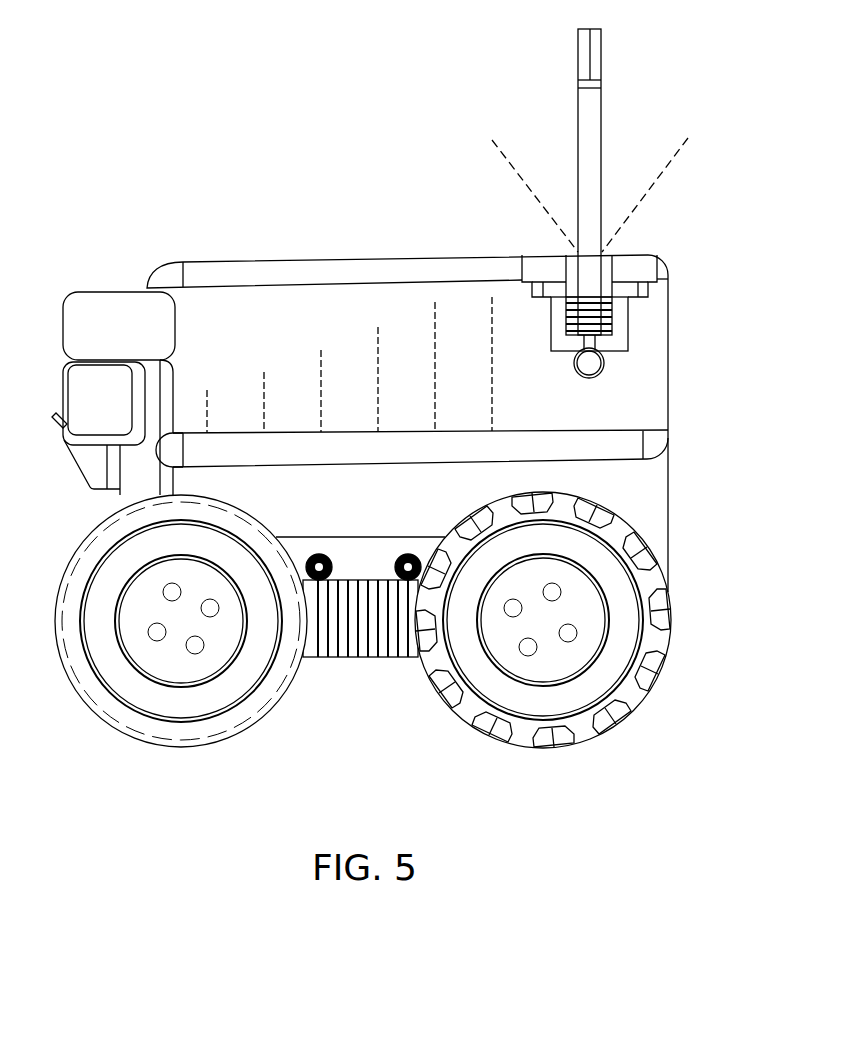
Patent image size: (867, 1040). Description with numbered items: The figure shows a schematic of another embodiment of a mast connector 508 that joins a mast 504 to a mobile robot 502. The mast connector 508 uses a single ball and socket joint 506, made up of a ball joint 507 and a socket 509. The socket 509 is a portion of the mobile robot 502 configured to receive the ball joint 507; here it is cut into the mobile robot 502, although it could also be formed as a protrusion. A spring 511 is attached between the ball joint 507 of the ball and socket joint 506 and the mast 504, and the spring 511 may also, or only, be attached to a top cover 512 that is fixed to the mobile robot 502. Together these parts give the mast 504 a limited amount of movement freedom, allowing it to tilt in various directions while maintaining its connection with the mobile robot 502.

The mobile robot 502 is at (150, 225).
The mast 504 is at (560, 120).
The ball and socket joint 506 is at (572, 372).
The ball joint 507 is at (590, 366).
The socket 509 is at (607, 360).
The mast connector 508 is at (657, 308).
The spring 511 is at (566, 318).
The top cover 512 is at (536, 262).